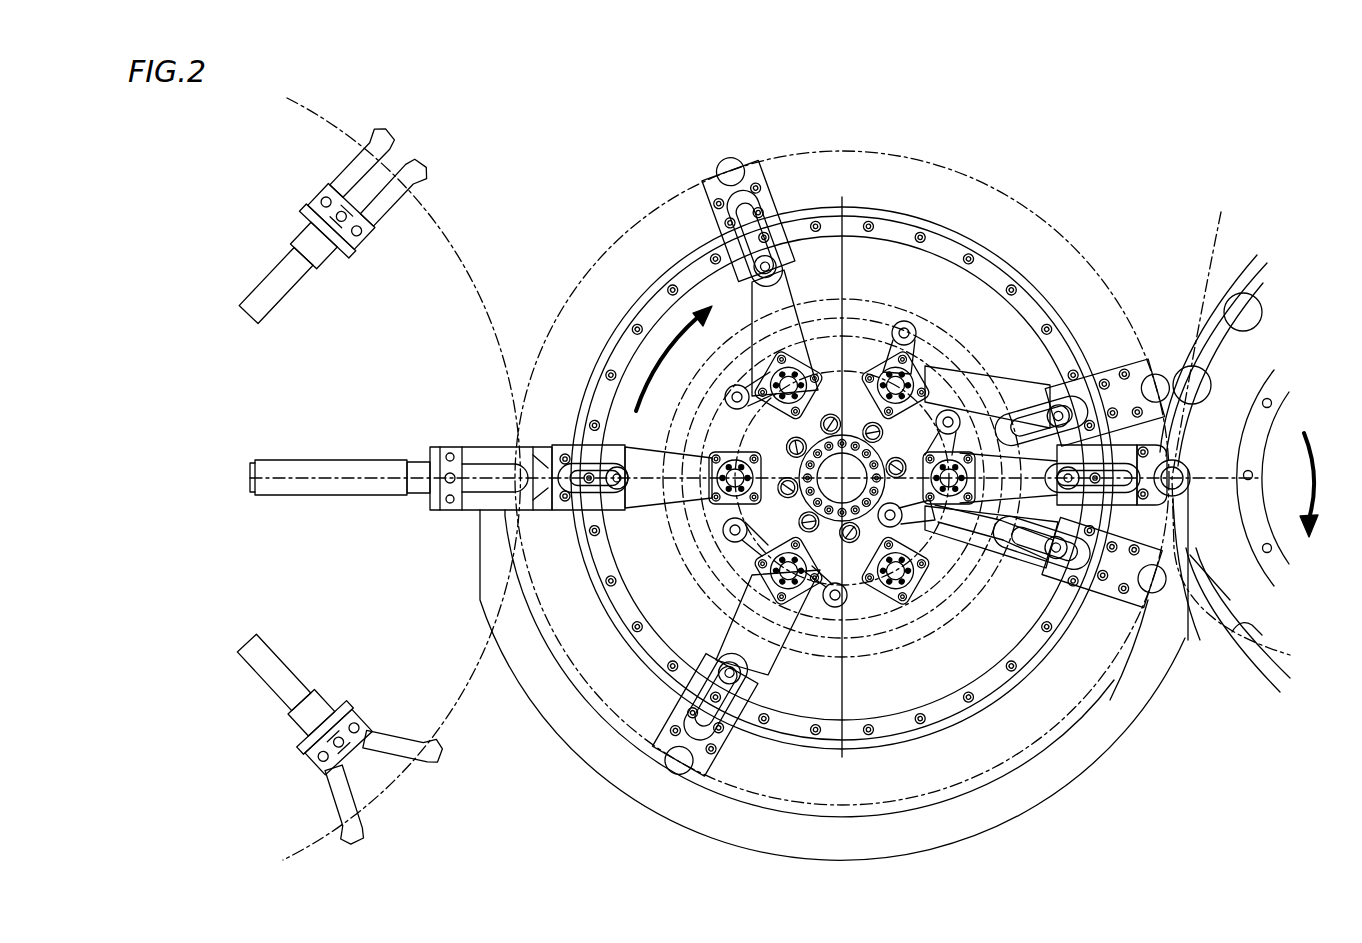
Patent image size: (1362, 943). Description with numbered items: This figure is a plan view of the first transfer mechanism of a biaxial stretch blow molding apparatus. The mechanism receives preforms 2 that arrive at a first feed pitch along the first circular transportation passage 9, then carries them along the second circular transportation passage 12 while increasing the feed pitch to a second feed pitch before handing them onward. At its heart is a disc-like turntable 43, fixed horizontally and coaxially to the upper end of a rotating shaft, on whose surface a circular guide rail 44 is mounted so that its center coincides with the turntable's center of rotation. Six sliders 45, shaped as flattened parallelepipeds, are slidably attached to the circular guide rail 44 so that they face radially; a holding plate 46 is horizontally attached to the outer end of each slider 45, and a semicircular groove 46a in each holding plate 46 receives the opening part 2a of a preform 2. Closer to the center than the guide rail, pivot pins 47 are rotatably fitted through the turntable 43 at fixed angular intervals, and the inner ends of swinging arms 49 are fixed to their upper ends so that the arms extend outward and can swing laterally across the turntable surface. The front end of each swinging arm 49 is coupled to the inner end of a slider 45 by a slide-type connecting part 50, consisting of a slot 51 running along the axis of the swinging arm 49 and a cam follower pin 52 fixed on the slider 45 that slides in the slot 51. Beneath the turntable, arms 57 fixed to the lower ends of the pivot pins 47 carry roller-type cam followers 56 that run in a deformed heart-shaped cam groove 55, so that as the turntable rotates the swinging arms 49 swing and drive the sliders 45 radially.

The preform 2 is at (1238, 293).
The opening part 2a is at (1165, 600).
The first circular transportation passage 9 is at (1231, 422).
The second circular transportation passage 12 is at (1012, 192).
The turntable 43 is at (906, 286).
The circular guide rail 44 is at (1040, 300).
The slider 45 is at (763, 202).
The holding plate 46 is at (1090, 655).
The semicircular groove 46a is at (1133, 665).
The pivot pin 47 is at (920, 360).
The swinging arm 49 is at (940, 578).
The slide-type connecting part 50 is at (994, 589).
The slot 51 is at (1023, 560).
The cam follower pin 52 is at (1040, 558).
The cam groove 55 is at (968, 362).
The cam follower 56 is at (903, 513).
The arm 57 is at (925, 528).